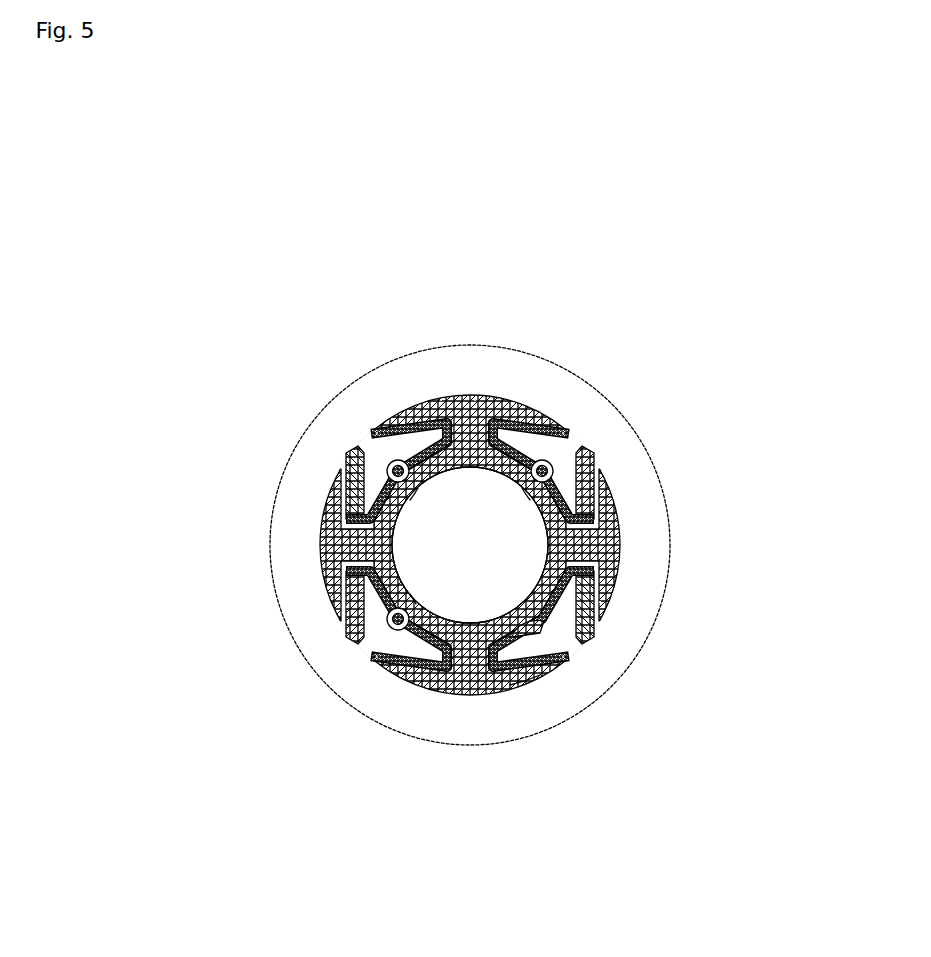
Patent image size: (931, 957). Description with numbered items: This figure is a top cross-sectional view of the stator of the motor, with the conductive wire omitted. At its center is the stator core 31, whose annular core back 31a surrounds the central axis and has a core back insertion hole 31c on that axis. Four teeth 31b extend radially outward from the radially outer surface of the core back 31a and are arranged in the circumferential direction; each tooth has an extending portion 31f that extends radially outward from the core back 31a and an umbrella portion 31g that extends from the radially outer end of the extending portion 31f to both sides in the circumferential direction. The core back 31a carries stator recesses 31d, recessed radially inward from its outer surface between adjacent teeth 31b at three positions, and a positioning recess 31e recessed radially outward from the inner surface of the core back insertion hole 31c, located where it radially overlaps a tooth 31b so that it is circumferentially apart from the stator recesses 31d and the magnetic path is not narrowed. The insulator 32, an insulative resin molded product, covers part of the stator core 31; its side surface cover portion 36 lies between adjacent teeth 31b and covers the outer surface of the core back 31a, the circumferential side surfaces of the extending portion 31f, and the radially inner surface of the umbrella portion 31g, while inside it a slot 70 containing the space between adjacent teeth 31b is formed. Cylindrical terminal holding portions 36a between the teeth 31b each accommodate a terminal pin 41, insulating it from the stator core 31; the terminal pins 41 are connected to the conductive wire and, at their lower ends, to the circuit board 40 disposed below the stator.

The stator core 31 is at (330, 590).
The core back 31a is at (535, 672).
The teeth 31b is at (447, 225).
The core back insertion hole 31c is at (524, 605).
The stator recess 31d is at (413, 487).
The positioning recess 31e is at (471, 468).
The extending portion 31f is at (475, 398).
The umbrella portion 31g is at (441, 398).
The insulator 32 is at (600, 488).
The side surface cover portion 36 is at (509, 418).
The terminal holding portion 36a is at (565, 436).
The circuit board 40 is at (402, 362).
The terminal pin 41 is at (544, 458).
The slot 70 is at (566, 476).